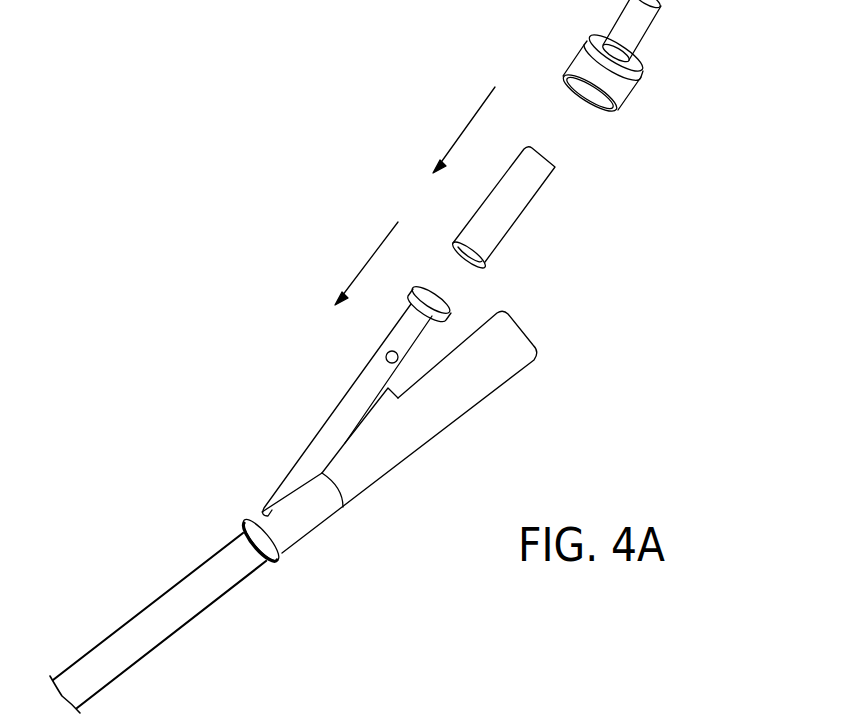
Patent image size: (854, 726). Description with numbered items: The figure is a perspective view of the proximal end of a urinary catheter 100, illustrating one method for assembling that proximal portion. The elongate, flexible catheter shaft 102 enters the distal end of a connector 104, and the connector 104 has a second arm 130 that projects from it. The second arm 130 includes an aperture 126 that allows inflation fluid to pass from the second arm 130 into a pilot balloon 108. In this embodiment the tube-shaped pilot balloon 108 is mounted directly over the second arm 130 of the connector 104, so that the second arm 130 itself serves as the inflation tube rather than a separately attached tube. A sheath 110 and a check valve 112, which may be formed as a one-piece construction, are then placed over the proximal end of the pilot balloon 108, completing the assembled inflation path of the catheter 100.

The urinary catheter 100 is at (198, 378).
The catheter shaft 102 is at (200, 615).
The connector 104 is at (368, 493).
The pilot balloon 108 is at (517, 225).
The sheath 110 is at (630, 88).
The check valve 112 is at (663, 25).
The aperture 126 is at (385, 356).
The second arm 130 is at (322, 427).